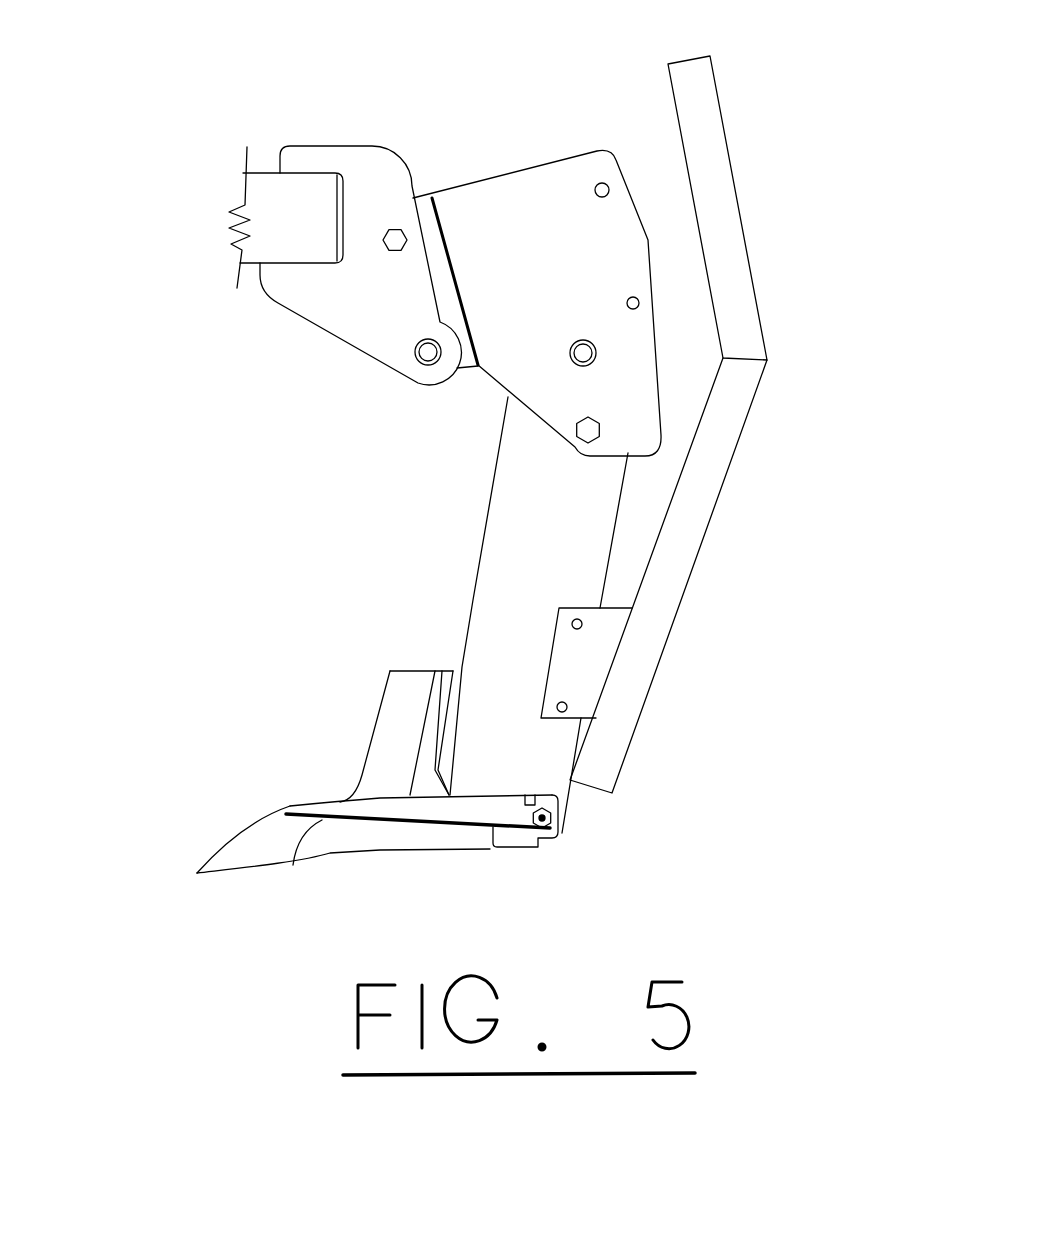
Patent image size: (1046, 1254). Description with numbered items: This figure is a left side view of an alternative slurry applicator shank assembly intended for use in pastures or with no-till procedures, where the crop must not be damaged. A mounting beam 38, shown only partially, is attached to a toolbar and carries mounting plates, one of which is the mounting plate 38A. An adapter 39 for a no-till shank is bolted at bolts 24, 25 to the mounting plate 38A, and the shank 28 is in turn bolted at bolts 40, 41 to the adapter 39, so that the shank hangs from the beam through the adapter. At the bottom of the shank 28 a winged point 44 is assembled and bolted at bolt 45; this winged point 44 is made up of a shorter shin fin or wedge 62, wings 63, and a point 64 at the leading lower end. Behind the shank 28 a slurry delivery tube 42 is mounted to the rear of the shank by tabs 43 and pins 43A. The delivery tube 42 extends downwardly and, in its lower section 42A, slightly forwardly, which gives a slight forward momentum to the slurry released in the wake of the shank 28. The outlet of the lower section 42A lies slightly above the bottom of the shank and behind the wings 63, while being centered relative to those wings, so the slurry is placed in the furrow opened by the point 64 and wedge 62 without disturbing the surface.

The bolt 24 is at (414, 352).
The bolt 25 is at (398, 224).
The shank 28 is at (505, 600).
The mounting beam 38 is at (293, 168).
The mounting plate 38A is at (276, 310).
The adapter 39 is at (580, 148).
The bolt 40 is at (569, 364).
The bolt 41 is at (575, 443).
The slurry delivery tube 42 is at (755, 287).
The lower section 42A is at (731, 473).
The tab 43 is at (642, 663).
The pin 43A is at (585, 626).
The winged point 44 is at (372, 718).
The bolt 45 is at (565, 827).
The shin fin or wedge 62 is at (416, 669).
The wings 63 is at (490, 818).
The point 64 is at (240, 831).